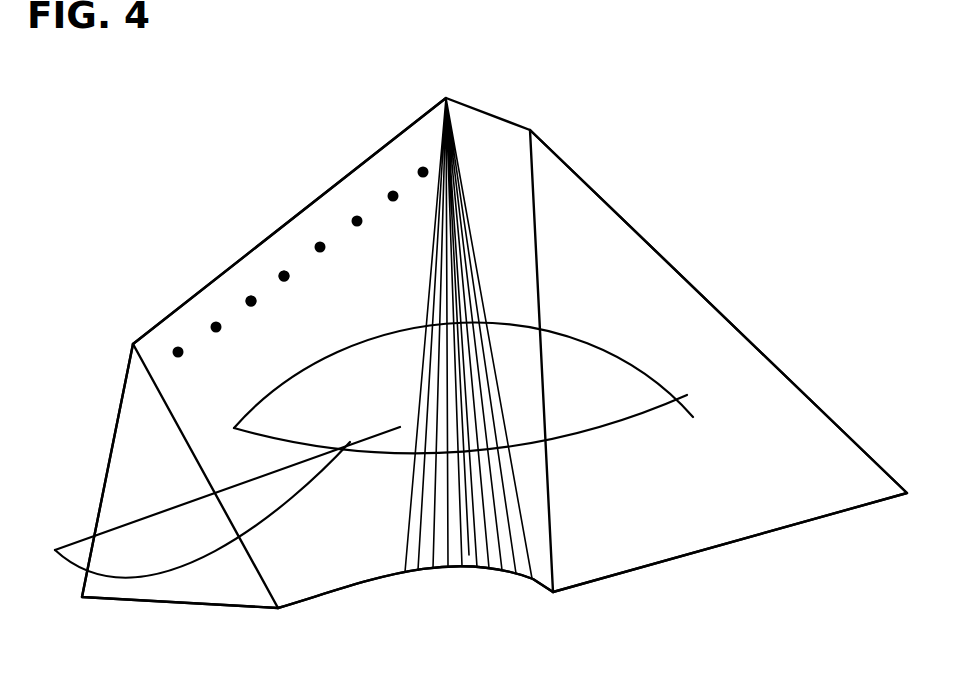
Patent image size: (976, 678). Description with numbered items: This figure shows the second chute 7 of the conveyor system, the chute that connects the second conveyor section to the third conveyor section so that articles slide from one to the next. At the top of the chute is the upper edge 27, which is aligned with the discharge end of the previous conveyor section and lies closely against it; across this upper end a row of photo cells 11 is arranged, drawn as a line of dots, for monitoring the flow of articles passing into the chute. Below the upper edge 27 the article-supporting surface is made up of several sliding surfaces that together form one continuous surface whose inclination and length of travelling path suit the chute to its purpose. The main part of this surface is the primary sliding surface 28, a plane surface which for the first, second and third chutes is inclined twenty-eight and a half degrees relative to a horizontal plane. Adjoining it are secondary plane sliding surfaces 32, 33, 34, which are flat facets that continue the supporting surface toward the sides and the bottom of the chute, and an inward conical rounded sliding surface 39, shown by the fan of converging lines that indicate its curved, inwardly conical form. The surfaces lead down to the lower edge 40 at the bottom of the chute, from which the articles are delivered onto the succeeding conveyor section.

The second chute 7 is at (160, 118).
The row of photo cells 11 is at (390, 190).
The upper edge 27 is at (322, 187).
The primary sliding surface 28 is at (273, 302).
The secondary plane sliding surface 32 is at (637, 268).
The secondary plane sliding surface 33 is at (518, 168).
The secondary plane sliding surface 34 is at (128, 463).
The inward conical rounded sliding surface 39 is at (462, 198).
The lower edge 40 is at (468, 572).